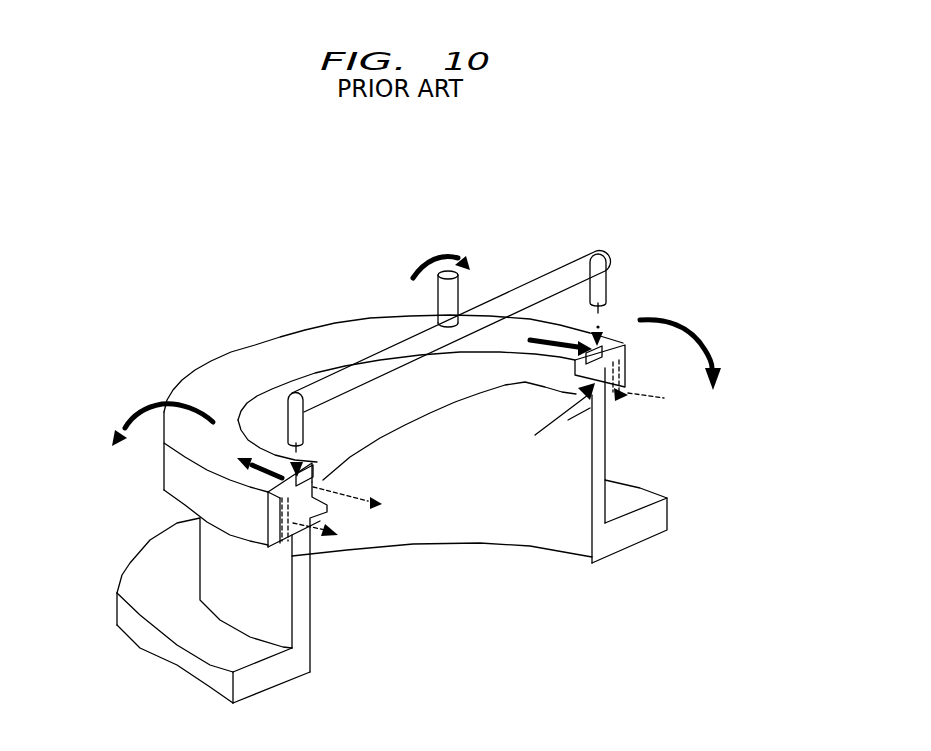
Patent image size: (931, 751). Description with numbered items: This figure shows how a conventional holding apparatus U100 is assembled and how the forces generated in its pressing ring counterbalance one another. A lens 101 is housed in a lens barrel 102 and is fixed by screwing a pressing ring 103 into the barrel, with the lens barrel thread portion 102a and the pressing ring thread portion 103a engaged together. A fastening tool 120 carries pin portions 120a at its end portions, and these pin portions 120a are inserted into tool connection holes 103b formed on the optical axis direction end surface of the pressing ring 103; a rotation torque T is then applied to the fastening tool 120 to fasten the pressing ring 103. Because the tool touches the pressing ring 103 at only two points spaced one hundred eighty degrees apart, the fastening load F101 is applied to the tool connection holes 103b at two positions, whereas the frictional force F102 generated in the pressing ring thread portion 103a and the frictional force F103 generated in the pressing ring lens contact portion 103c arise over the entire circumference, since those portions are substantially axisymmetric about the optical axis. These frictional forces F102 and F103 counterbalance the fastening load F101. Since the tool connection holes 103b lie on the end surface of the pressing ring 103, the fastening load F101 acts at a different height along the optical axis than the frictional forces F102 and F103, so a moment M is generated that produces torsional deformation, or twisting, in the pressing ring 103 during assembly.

The holding apparatus U100 is at (315, 217).
The rotation torque T is at (447, 248).
The lens 101 is at (400, 480).
The lens barrel 102 is at (173, 632).
The lens barrel thread portion 102a is at (310, 530).
The pressing ring 103 is at (327, 342).
The pressing ring thread portion 103a is at (270, 545).
The tool connection holes 103b is at (316, 470).
The pressing ring lens contact portion 103c is at (560, 382).
The fastening tool 120 is at (427, 335).
The pin portions 120a is at (288, 392).
The fastening load F101 is at (559, 343).
The frictional force F102 is at (655, 392).
The frictional force F103 is at (619, 403).
The moment M is at (693, 320).